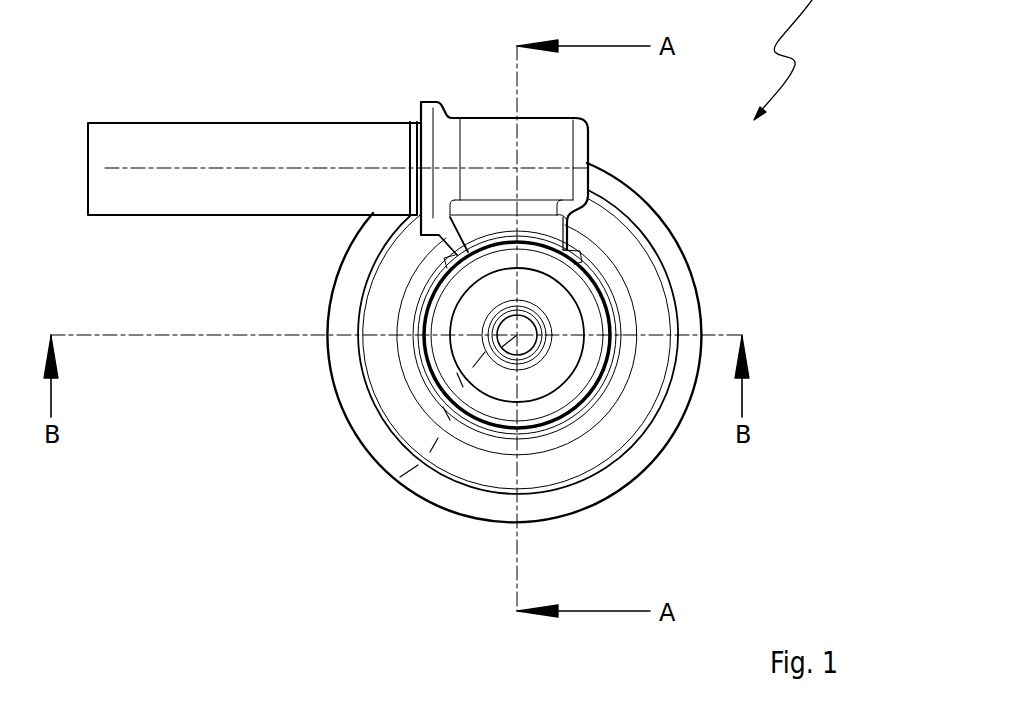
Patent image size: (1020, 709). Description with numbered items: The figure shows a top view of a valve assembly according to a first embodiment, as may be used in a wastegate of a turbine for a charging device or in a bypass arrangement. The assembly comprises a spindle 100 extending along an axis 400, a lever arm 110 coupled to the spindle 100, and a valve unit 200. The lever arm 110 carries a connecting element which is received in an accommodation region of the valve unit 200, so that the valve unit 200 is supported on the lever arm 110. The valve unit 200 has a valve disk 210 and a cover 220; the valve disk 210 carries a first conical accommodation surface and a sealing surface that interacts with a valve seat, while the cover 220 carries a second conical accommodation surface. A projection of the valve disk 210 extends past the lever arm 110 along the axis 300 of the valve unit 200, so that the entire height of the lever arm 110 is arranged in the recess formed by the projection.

The spindle 100 is at (159, 111).
The lever arm 110 is at (583, 236).
The valve unit 200 is at (722, 285).
The valve disk 210 is at (390, 397).
The cover 220 is at (555, 368).
The axis 300 is at (393, 483).
The axis 400 is at (237, 168).